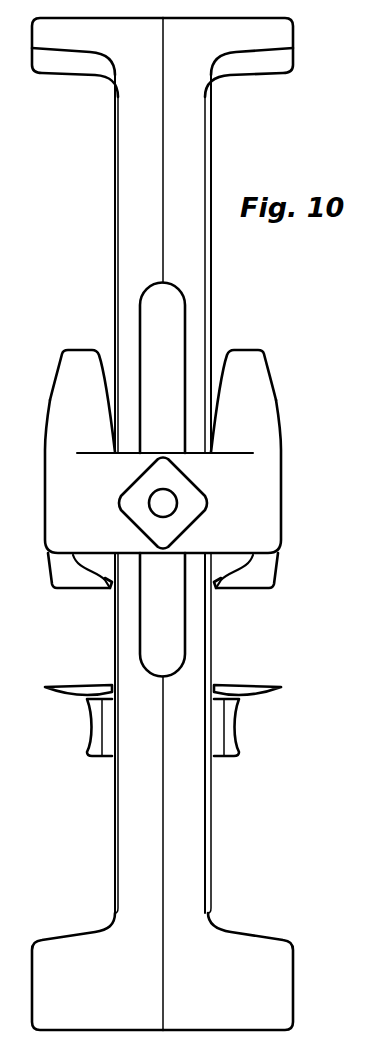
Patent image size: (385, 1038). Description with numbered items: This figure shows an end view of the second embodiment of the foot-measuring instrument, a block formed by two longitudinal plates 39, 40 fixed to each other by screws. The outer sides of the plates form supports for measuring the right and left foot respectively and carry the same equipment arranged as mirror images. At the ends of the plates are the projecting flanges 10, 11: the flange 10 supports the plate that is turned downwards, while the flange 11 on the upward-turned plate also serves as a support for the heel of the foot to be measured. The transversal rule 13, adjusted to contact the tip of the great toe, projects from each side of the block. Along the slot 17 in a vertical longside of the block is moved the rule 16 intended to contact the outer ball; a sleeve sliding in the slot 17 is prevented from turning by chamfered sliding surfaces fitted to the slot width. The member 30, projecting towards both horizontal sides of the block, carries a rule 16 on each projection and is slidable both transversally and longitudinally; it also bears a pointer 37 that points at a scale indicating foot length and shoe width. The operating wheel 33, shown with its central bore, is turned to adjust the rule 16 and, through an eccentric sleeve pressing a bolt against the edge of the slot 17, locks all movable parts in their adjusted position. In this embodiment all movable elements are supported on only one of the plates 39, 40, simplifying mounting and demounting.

The projecting flange 10 is at (52, 922).
The projecting flange 11 is at (72, 74).
The transversal rule 13 is at (65, 686).
The third rule 16 is at (63, 365).
The slot 17 is at (175, 304).
The member 30 is at (265, 533).
The operating wheel 33 is at (200, 502).
The pointer 37 is at (105, 586).
The plate 39 is at (122, 830).
The plate 40 is at (199, 830).